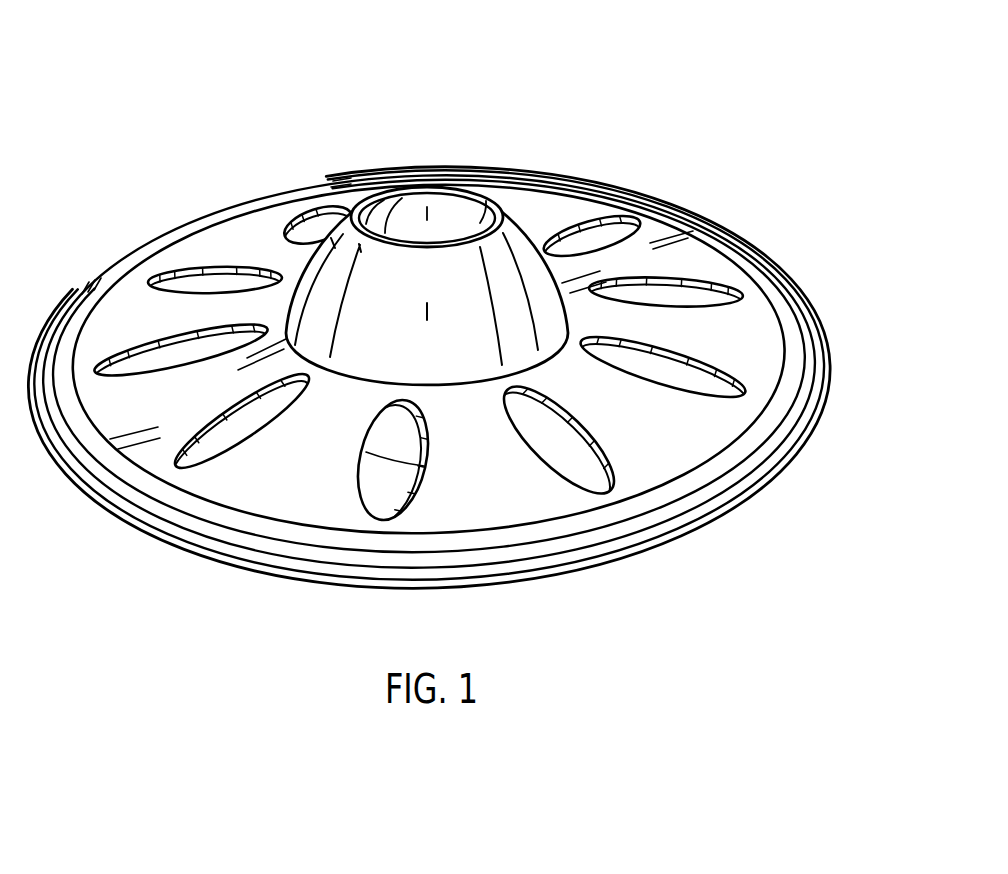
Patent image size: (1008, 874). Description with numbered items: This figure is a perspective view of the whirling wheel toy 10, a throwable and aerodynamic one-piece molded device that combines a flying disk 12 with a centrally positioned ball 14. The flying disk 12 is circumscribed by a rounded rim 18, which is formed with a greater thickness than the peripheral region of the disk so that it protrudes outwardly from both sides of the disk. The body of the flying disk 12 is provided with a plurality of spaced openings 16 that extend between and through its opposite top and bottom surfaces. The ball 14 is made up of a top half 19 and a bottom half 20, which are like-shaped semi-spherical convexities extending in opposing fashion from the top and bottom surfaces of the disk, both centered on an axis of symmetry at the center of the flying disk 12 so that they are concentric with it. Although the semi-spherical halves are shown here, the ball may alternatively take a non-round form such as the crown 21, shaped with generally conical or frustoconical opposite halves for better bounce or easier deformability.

The whirling wheel toy 10 is at (465, 330).
The flying disk 12 is at (697, 258).
The ball 14 is at (474, 234).
The spaced openings 16 is at (218, 287).
The rounded rim 18 is at (798, 332).
The top half 19 is at (410, 355).
The bottom half 20 is at (402, 440).
The crown 21 is at (420, 217).